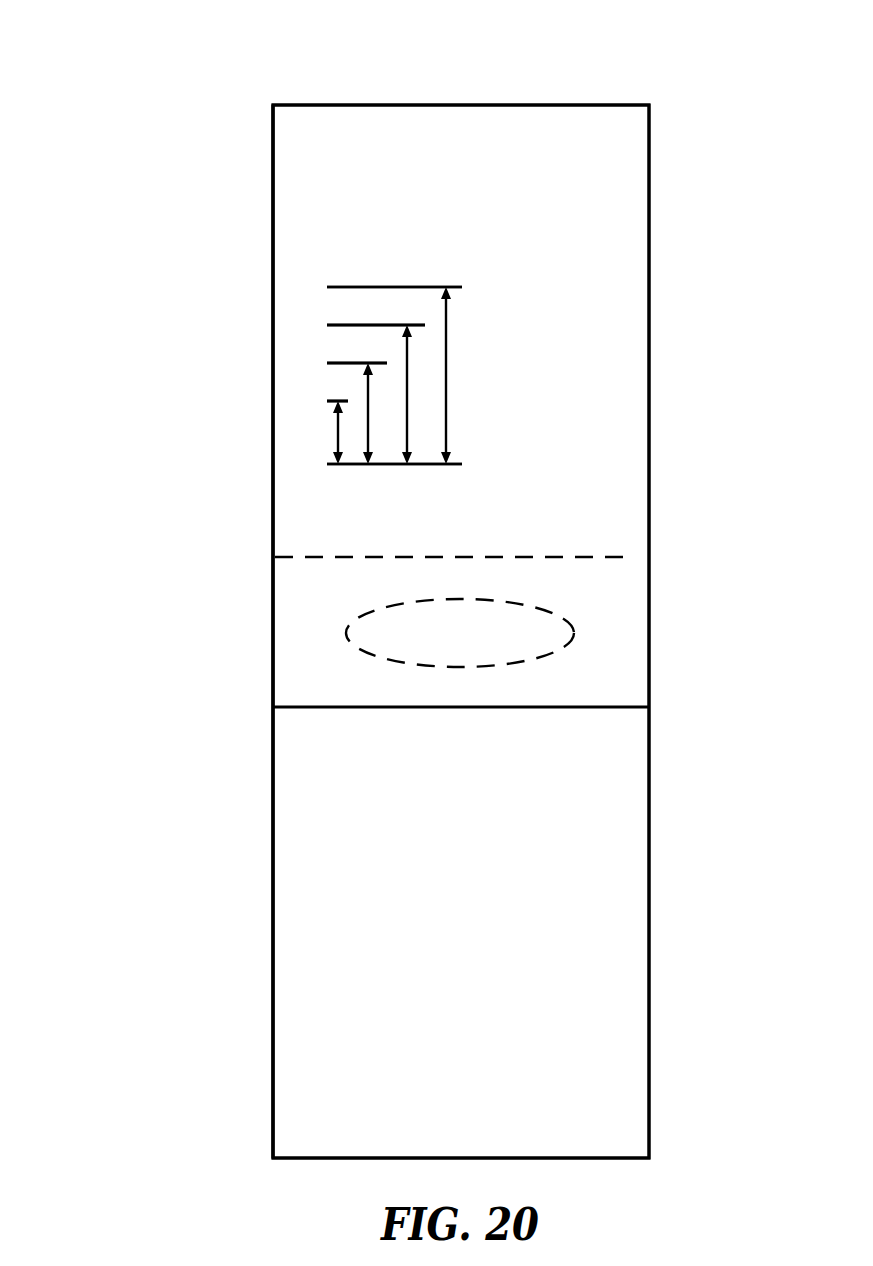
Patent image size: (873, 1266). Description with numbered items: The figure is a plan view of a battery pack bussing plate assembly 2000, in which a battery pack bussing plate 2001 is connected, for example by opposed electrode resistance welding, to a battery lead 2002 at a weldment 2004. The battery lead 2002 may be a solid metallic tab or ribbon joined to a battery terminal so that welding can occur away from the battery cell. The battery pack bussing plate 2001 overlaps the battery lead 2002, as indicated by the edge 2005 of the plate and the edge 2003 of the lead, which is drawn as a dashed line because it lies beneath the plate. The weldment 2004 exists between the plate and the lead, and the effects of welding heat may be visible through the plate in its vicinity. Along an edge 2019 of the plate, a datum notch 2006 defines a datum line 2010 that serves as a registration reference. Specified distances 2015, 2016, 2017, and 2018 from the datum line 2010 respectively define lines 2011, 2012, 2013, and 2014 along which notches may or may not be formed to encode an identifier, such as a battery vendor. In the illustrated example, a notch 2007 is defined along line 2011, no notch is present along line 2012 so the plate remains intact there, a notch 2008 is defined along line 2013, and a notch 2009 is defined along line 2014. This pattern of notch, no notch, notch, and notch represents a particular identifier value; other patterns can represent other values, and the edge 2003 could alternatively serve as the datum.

The battery pack bussing plate assembly 2000 is at (90, 40).
The battery pack bussing plate 2001 is at (650, 265).
The battery lead 2002 is at (650, 962).
The edge of battery lead 2003 is at (503, 557).
The weldment 2004 is at (522, 606).
The edge of battery pack bussing plate 2005 is at (523, 710).
The datum notch 2006 is at (273, 481).
The notch 2007 is at (278, 403).
The notch 2008 is at (283, 333).
The notch 2009 is at (283, 295).
The datum line 2010 is at (390, 468).
The line 2011 is at (335, 401).
The line 2012 is at (345, 363).
The line 2013 is at (358, 325).
The line 2014 is at (367, 287).
The distance 2015 is at (340, 438).
The distance 2016 is at (370, 410).
The distance 2017 is at (410, 371).
The distance 2018 is at (448, 326).
The edge of battery pack bussing plate 2019 is at (272, 190).